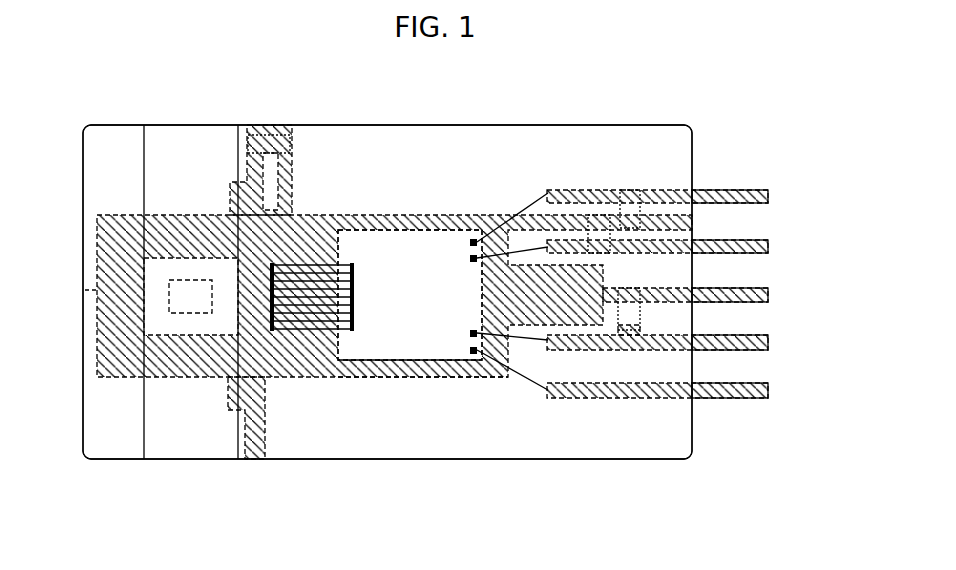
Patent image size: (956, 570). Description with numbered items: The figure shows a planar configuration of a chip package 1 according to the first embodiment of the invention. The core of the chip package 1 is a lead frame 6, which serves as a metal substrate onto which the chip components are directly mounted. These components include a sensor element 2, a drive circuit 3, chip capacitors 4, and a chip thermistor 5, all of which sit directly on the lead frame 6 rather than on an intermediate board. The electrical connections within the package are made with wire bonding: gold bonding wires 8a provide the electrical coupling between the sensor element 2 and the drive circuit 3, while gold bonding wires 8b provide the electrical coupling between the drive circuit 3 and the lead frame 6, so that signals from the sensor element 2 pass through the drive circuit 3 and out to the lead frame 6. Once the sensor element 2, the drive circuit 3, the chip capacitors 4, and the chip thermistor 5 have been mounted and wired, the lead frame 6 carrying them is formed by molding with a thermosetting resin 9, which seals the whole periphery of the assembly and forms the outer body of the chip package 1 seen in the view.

The chip package 1 is at (578, 125).
The sensor element 2 is at (184, 265).
The drive circuit 3 is at (366, 237).
The chip capacitors 4 is at (633, 212).
The chip thermistor 5 is at (270, 142).
The lead frame 6 is at (186, 355).
The gold bonding wires 8a is at (305, 332).
The gold bonding wires 8b is at (522, 377).
The thermosetting resin 9 is at (612, 430).